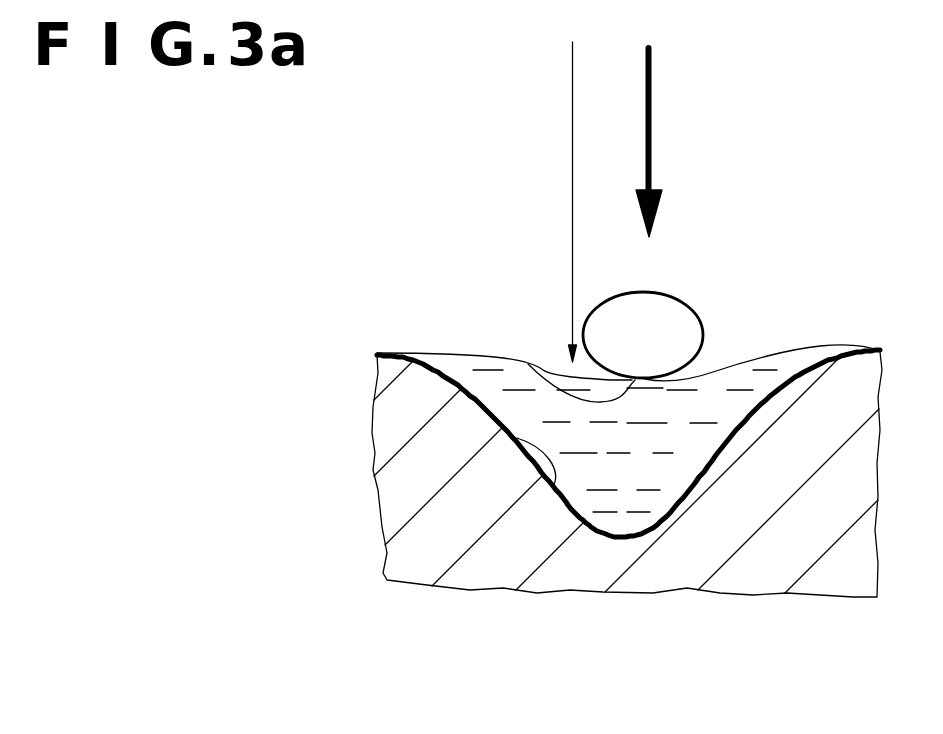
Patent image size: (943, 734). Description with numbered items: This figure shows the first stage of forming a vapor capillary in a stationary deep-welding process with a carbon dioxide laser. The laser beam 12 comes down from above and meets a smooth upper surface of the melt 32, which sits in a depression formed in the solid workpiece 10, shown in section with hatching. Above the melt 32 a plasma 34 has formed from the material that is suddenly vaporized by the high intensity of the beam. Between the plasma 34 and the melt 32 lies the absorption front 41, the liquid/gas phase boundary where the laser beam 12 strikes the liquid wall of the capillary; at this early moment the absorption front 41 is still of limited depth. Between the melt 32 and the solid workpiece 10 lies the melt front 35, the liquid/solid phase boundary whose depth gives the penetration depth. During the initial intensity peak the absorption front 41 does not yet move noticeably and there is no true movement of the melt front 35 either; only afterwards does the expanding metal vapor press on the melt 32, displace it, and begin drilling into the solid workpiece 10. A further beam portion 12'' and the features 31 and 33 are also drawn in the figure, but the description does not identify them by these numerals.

The solid workpiece 10 is at (423, 494).
The laser beam 12 is at (687, 130).
The secondary laser beam 12'' is at (516, 202).
The liquid surface 31 is at (757, 352).
The melt 32 is at (702, 447).
The liquid ink in crater 33 is at (632, 462).
The plasma 34 is at (649, 325).
The melt front 35 is at (549, 474).
The absorption front 41 is at (550, 388).